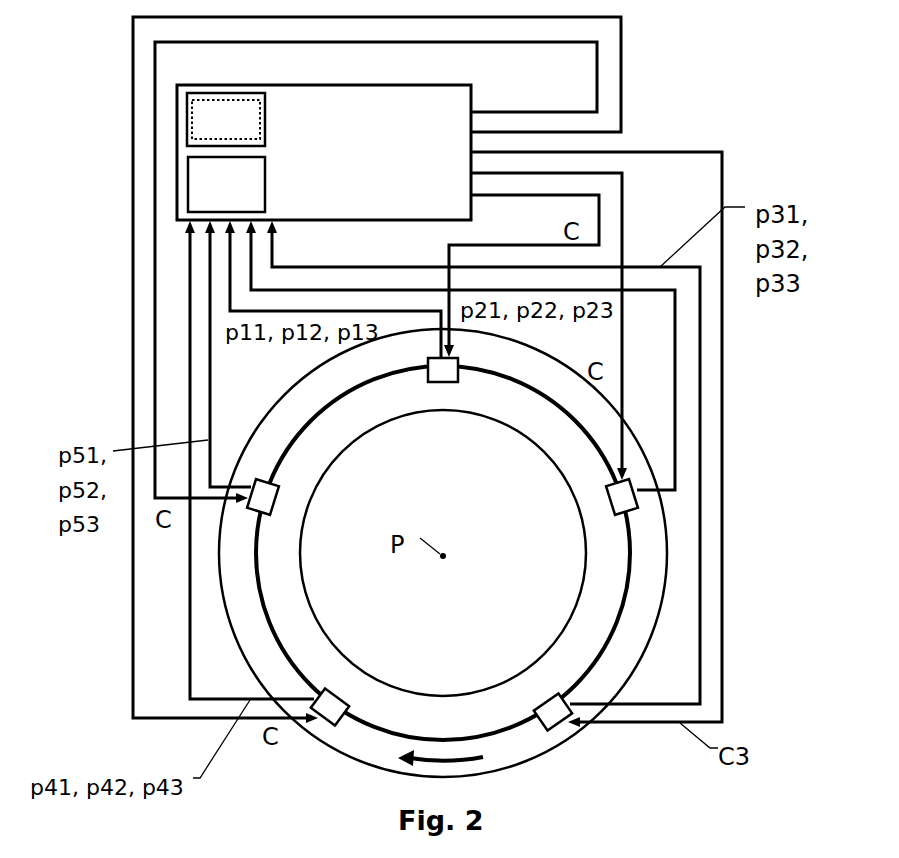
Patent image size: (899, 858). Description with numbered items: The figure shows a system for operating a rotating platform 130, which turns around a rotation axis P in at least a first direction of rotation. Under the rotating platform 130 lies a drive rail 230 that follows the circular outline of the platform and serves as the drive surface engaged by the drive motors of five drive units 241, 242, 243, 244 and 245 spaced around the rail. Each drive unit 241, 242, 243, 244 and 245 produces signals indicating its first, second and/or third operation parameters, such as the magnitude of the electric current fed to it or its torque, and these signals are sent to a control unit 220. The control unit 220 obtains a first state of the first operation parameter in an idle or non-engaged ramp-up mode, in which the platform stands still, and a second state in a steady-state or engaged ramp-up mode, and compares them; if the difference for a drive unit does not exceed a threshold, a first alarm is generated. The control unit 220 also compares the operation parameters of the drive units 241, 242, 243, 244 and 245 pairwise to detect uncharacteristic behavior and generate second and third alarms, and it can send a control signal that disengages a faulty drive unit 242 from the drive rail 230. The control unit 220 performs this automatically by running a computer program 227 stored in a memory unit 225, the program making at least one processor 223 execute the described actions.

The control unit 220 is at (252, 83).
The memory unit 225 is at (266, 118).
The computer program 227 is at (226, 120).
The processor 223 is at (266, 180).
The rotating platform 130 is at (312, 397).
The drive rail 230 is at (628, 593).
The drive unit 241 is at (442, 383).
The drive unit 242 is at (610, 498).
The drive unit 243 is at (547, 703).
The drive unit 244 is at (337, 697).
The drive unit 245 is at (280, 502).